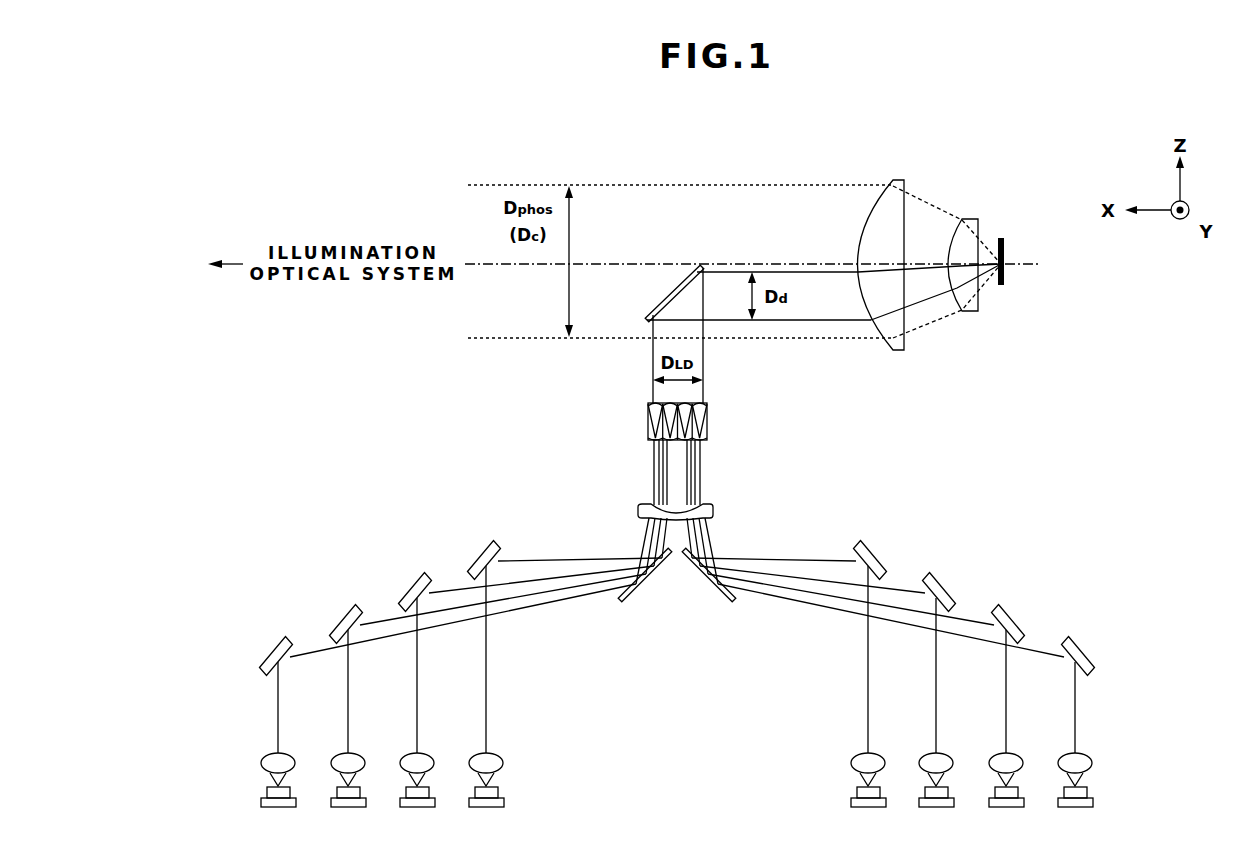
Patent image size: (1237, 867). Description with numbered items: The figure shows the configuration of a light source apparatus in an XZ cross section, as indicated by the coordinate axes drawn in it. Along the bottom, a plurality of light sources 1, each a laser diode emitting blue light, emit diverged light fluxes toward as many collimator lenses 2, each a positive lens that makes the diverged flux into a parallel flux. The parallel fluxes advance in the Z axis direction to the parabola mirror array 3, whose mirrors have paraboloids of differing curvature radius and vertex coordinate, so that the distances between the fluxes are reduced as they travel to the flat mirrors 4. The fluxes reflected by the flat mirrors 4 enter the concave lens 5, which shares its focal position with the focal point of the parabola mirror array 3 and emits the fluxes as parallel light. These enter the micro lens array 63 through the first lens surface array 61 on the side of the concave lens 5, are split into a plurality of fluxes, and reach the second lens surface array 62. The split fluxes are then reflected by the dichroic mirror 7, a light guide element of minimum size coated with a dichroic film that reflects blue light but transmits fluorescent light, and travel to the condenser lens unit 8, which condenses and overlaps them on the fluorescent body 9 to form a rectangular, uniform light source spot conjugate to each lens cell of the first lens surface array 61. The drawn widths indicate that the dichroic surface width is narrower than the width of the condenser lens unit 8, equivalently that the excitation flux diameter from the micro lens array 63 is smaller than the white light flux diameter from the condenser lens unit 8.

The light source 1 is at (506, 801).
The collimator lens 2 is at (504, 762).
The parabola mirror array 3 is at (488, 519).
The flat mirrors 4 is at (720, 597).
The concave lens 5 is at (716, 510).
The first lens surface array 61 is at (649, 440).
The second lens surface array 62 is at (648, 405).
The micro lens array 63 is at (710, 421).
The dichroic mirror 7 is at (670, 290).
The condenser lens unit 8 is at (853, 167).
The fluorescent body 9 is at (1005, 276).